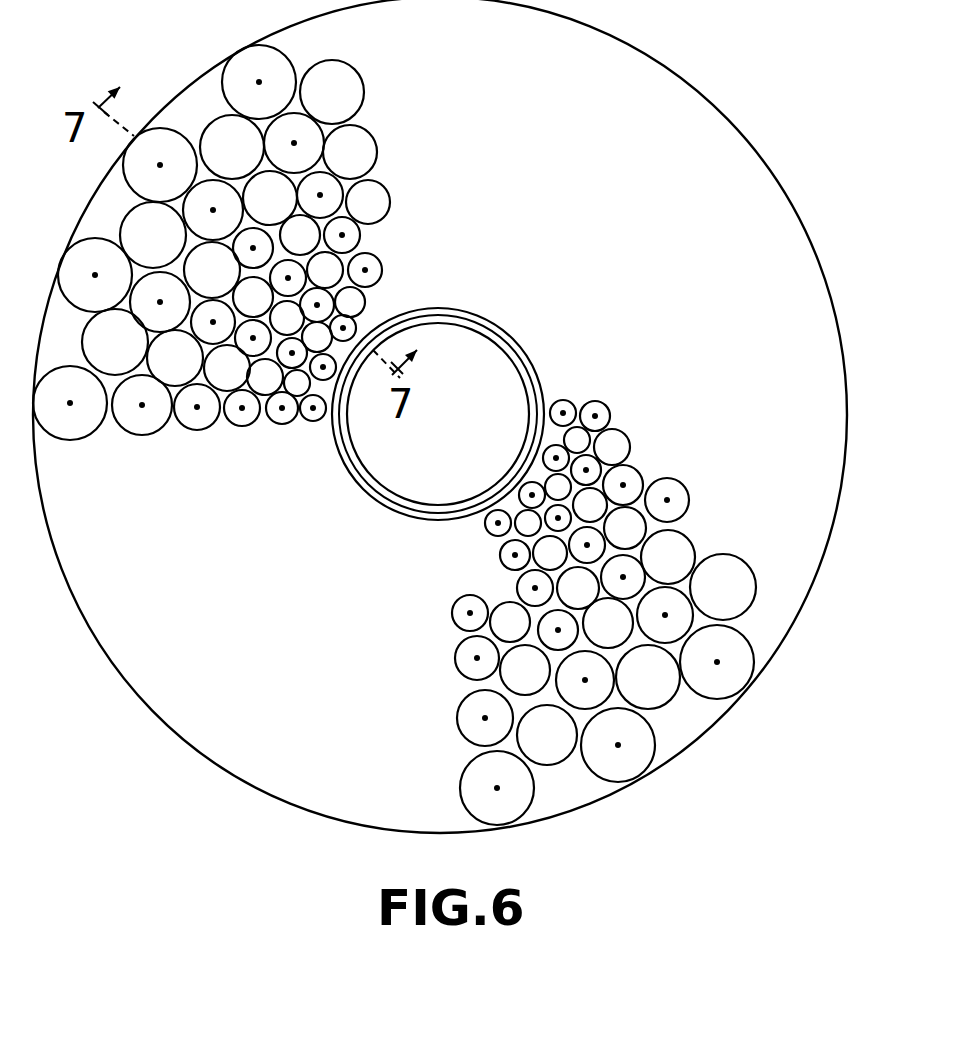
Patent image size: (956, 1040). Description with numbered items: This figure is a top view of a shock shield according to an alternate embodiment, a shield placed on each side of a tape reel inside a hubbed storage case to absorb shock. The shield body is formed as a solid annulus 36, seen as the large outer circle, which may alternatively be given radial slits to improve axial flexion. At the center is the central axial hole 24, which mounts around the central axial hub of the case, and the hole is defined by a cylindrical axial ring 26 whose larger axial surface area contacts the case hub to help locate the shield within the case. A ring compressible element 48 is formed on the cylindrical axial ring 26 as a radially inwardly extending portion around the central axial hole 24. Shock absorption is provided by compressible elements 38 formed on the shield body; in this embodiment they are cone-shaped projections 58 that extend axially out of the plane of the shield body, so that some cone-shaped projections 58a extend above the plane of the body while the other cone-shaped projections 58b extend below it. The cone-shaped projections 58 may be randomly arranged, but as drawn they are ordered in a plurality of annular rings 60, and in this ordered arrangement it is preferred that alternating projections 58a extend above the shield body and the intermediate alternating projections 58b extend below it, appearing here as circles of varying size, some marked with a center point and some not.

The central axial hole 24 is at (463, 347).
The cylindrical axial ring 26 is at (520, 338).
The ring compressible element 48 is at (522, 372).
The solid annulus 36 is at (303, 816).
The compressible elements 38 is at (501, 788).
The cone-shaped projections 58 is at (496, 595).
The cone-shaped projections extending above the shield body 58a is at (515, 805).
The cone-shaped projections extending below the shield body 58b is at (563, 757).
The annular rings 60 is at (750, 630).